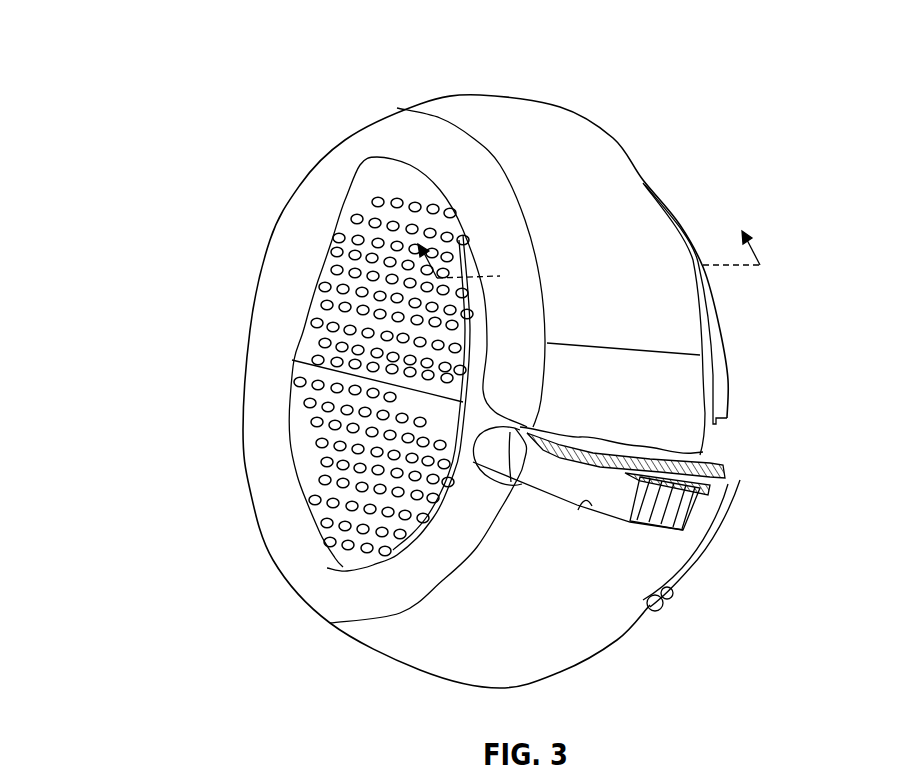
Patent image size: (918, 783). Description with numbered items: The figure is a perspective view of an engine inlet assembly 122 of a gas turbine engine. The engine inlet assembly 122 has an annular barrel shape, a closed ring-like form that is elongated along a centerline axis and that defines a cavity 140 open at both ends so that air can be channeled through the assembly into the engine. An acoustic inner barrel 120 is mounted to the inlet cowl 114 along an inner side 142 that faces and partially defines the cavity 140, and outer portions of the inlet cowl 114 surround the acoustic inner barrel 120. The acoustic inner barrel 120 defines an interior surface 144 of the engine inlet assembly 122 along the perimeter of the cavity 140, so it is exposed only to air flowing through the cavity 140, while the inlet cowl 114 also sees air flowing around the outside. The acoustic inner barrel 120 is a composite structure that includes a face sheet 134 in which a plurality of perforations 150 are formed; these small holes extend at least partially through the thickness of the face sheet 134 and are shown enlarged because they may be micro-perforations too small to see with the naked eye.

The inlet cowl 114 is at (600, 553).
The acoustic inner barrel 120 is at (310, 463).
The engine inlet assembly 122 is at (461, 81).
The face sheet 134 is at (313, 372).
The cavity 140 is at (431, 191).
The inner side 142 is at (297, 483).
The interior surface 144 is at (413, 405).
The perforations 150 is at (372, 222).